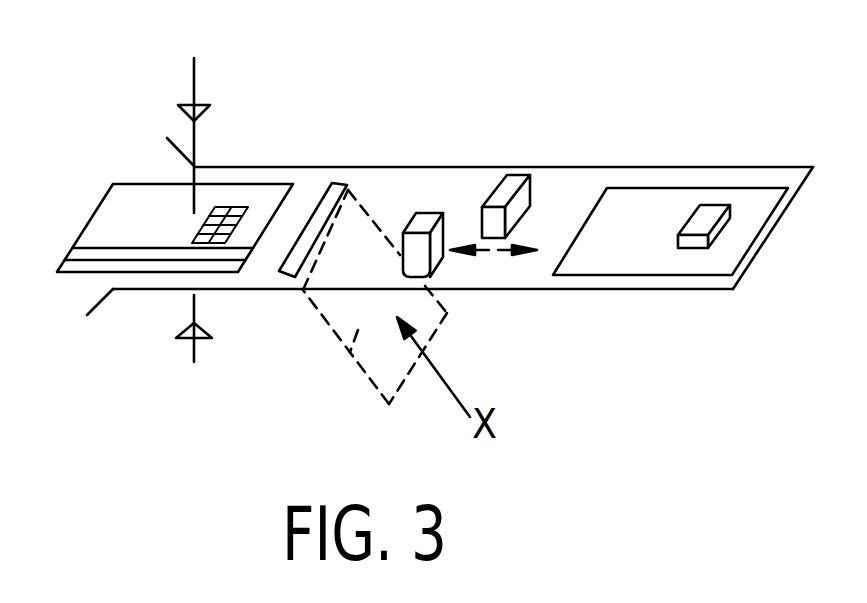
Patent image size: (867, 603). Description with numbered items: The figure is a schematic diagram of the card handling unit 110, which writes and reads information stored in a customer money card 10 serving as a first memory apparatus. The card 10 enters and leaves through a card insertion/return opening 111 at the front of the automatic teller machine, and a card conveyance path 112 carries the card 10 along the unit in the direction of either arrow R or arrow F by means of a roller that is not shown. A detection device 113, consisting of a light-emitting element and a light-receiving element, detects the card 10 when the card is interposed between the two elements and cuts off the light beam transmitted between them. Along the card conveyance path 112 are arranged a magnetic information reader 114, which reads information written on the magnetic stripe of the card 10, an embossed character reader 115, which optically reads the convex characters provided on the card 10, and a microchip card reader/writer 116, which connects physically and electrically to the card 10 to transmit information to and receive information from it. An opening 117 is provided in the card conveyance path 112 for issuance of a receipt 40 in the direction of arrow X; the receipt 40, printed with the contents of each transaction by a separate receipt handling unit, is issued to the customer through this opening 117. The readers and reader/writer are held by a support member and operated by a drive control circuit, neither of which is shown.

The customer money card 10 is at (122, 217).
The receipt 40 is at (375, 309).
The card handling unit 110 is at (596, 122).
The card insertion/return opening 111 is at (171, 168).
The card conveyance path 112 is at (487, 272).
The detection device 113 is at (194, 71).
The magnetic information reader 114 is at (422, 214).
The embossed character reader 115 is at (512, 178).
The microchip card reader/writer 116 is at (707, 215).
The opening 117 is at (288, 270).